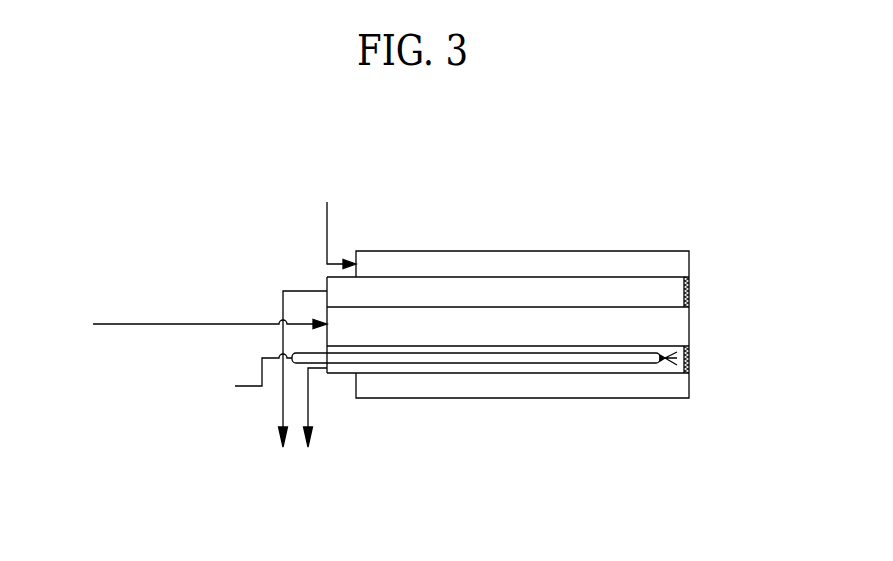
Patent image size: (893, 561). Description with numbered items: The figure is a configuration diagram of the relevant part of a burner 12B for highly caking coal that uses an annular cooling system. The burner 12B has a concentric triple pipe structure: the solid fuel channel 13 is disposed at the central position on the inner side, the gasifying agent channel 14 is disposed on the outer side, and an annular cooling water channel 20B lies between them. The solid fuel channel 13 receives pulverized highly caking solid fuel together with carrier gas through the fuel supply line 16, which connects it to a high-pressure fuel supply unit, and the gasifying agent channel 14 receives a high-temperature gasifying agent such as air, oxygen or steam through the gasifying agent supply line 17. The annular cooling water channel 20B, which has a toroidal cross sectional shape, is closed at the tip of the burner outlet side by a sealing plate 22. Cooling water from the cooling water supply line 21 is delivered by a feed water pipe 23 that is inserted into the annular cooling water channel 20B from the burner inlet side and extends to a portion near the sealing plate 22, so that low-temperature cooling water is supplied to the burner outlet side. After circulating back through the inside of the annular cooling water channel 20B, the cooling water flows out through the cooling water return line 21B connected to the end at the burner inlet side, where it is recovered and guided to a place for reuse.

The burner 12B is at (523, 303).
The solid fuel channel 13 is at (670, 323).
The gasifying agent channel 14 is at (495, 267).
The fuel supply line 16 is at (115, 328).
The gasifying agent supply line 17 is at (328, 223).
The annular cooling water channel 20B is at (637, 291).
The cooling water supply line 21 is at (243, 387).
The cooling water return line 21B is at (302, 290).
The sealing plate 22 is at (692, 285).
The feed water pipe 23 is at (578, 363).